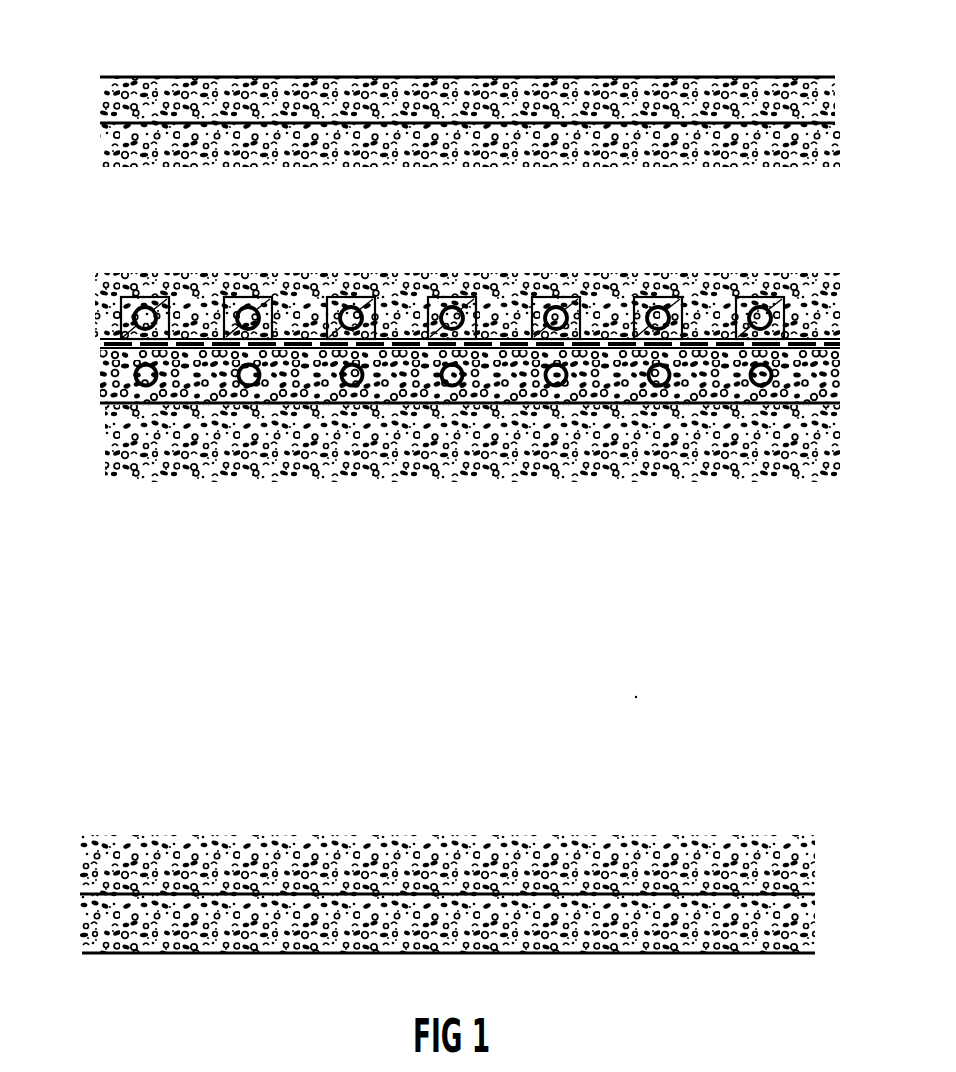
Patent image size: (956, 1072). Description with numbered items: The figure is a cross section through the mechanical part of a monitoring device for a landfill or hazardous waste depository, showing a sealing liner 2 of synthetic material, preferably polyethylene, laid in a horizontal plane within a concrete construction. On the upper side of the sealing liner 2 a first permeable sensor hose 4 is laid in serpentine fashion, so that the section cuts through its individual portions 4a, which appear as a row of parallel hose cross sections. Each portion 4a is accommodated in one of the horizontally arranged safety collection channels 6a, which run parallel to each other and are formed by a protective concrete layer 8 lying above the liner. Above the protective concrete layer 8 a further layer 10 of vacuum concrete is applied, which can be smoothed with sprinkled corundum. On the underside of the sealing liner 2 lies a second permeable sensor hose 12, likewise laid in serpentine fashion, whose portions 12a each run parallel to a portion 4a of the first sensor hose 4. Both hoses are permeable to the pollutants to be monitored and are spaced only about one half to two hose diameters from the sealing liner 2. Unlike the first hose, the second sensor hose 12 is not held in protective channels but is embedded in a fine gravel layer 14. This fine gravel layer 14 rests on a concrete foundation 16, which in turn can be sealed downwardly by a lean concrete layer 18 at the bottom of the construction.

The sealing liner 2 is at (107, 343).
The first permeable sensor hose 4 is at (437, 283).
The portions of the first sensor hose 4a is at (627, 290).
The safety collection channels 6a is at (147, 297).
The protective concrete layer 8 is at (450, 126).
The vacuum concrete layer 10 is at (157, 83).
The second permeable sensor hose 12 is at (440, 436).
The portions of the second sensor hose 12a is at (250, 386).
The fine gravel layer 14 is at (136, 400).
The foundation 16 is at (198, 568).
The lean concrete layer 18 is at (113, 930).